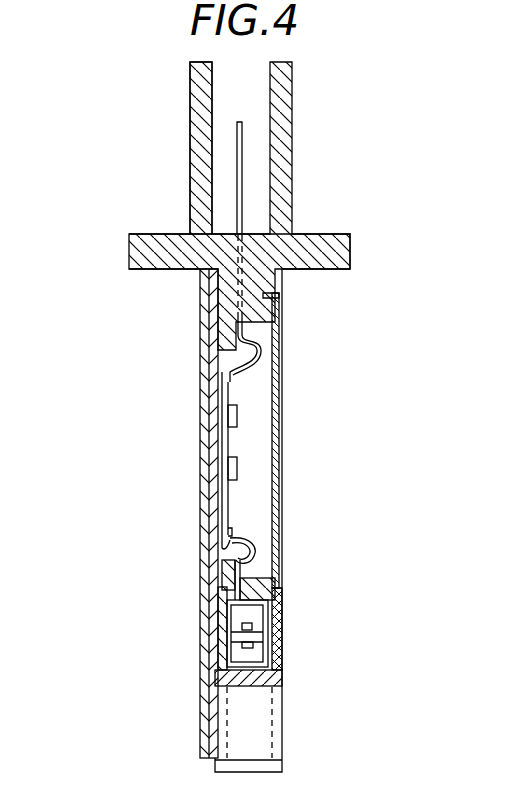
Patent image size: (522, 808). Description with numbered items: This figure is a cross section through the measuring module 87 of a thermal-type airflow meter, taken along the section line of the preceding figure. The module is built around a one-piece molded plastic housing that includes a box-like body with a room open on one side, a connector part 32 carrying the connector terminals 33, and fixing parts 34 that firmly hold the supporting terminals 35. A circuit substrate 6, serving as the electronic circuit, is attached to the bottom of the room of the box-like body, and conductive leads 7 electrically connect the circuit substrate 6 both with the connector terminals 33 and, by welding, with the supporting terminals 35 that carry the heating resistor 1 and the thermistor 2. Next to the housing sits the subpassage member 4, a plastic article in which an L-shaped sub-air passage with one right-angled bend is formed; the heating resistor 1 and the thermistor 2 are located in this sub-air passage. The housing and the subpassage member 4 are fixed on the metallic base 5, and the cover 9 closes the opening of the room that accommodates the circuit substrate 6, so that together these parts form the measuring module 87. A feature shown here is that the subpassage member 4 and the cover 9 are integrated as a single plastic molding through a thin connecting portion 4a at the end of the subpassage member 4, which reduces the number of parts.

The measuring module 87 is at (198, 95).
The connector terminals 33 is at (242, 122).
The connector part 32 is at (290, 176).
The supporting terminals 35 is at (338, 250).
The cover 9 is at (280, 315).
The conductive leads 7 is at (258, 358).
The circuit substrate 6 is at (223, 450).
The metallic base 5 is at (200, 530).
The thermistor 2 is at (214, 608).
The heating resistor 1 is at (212, 633).
The subpassage member 4 is at (200, 673).
The thin connecting portion 4a is at (283, 588).
The fixing parts 34 is at (280, 613).